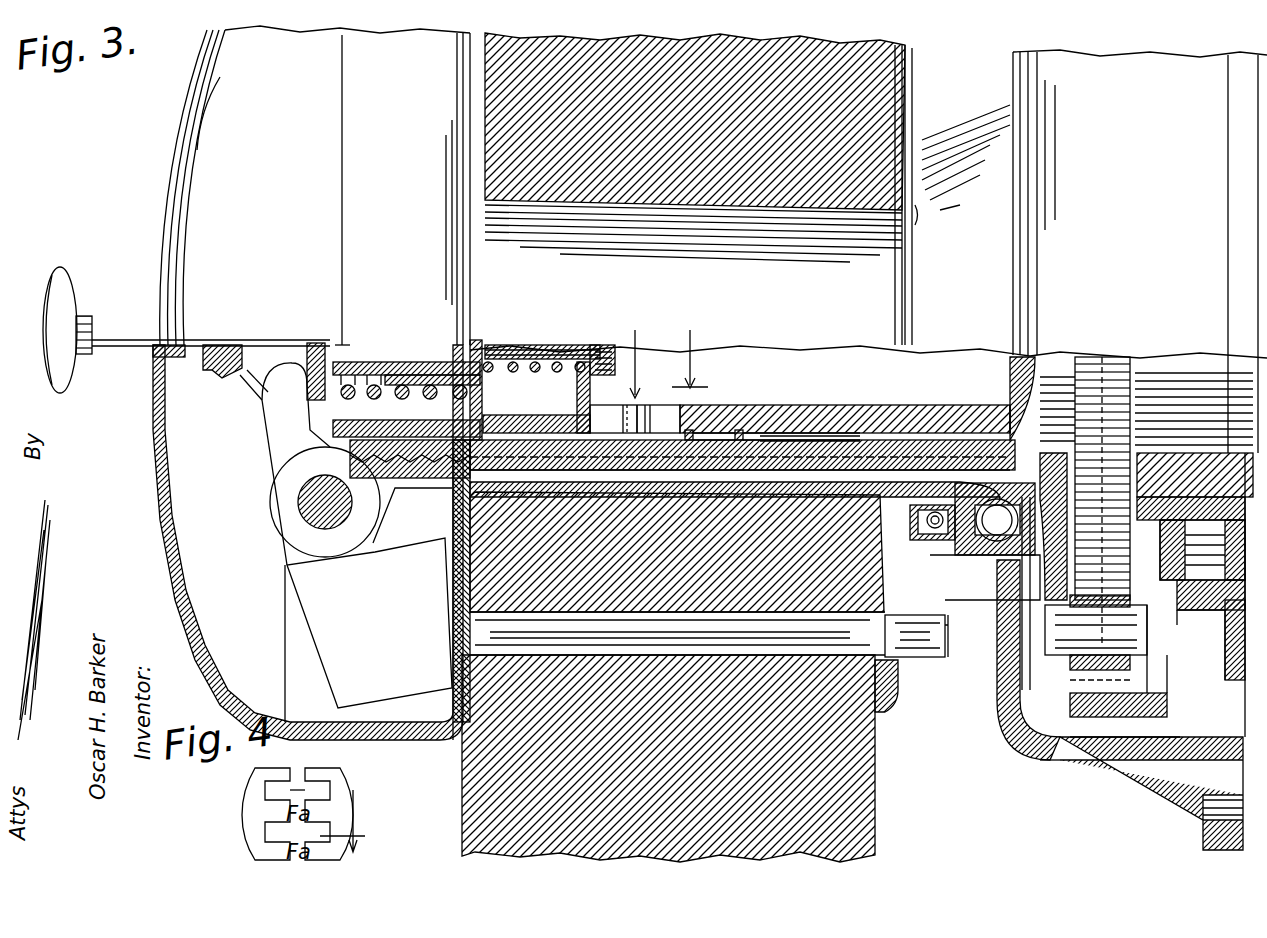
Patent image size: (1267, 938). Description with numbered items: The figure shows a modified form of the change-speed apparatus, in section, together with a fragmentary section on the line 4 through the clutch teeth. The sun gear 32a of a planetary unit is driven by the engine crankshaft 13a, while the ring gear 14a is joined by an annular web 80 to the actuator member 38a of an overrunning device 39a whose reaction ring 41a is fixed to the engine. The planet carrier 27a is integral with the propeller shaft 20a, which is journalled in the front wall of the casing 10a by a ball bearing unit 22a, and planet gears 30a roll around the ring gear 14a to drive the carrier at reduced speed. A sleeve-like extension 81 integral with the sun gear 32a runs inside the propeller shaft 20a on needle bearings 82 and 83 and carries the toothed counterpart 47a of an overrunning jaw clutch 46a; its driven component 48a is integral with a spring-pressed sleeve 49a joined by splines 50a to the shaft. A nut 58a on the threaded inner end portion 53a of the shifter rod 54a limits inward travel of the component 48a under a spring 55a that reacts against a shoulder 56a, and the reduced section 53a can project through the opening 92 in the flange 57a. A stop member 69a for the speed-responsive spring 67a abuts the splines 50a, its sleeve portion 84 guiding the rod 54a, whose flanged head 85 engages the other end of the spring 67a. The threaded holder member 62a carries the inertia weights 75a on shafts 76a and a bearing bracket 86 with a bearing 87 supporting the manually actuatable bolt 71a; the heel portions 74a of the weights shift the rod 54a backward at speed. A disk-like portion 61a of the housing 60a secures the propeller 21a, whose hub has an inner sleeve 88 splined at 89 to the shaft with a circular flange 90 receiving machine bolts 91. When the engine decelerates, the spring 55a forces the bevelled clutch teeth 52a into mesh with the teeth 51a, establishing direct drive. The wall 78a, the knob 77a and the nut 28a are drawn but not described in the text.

In FIG. 3, the housing 60a is at (172, 157).
In FIG. 3, the wall 78a is at (165, 200).
In FIG. 3, the flanged head 85 is at (335, 345).
In FIG. 3, the knob 77a is at (56, 278).
In FIG. 3, the manually actuatable bolt 71a is at (130, 335).
In FIG. 3, the inertia weights 75a is at (308, 542).
In FIG. 3, the shafts 76a is at (320, 505).
In FIG. 3, the bearing bracket 86 is at (247, 378).
In FIG. 3, the bearing 87 is at (215, 372).
In FIG. 3, the heel portions 74a is at (298, 365).
In FIG. 3, the sleeve portion 84 is at (412, 385).
In FIG. 3, the shifter rod 54a is at (406, 363).
In FIG. 3, the speed responsive device spring 67a is at (365, 399).
In FIG. 3, the stop member 69a is at (440, 388).
In FIG. 3, the splines 50a is at (457, 404).
In FIG. 3, the threaded holder member 62a is at (430, 488).
In FIG. 3, the spring 55a is at (540, 337).
In FIG. 3, the shoulder 56a is at (490, 345).
In FIG. 3, the threaded inner end portion 53a is at (522, 345).
In FIG. 3, the spring-pressed sleeve 49a is at (535, 412).
In FIG. 3, the flange 57a is at (580, 380).
In FIG. 3, the opening 92 is at (592, 350).
In FIG. 3, the nut 58a is at (604, 352).
In FIG. 3, the driven component 48a is at (632, 393).
In FIG. 4, the driven component 48a is at (250, 812).
In FIG. 3, the overrunning jaw clutch 46a is at (648, 403).
In FIG. 3, the section line 4 is at (669, 342).
In FIG. 3, the inner sleeve 88 is at (810, 485).
In FIG. 3, the splines 89 is at (764, 466).
In FIG. 3, the needle bearings 83 is at (790, 486).
In FIG. 3, the toothed counterpart 47a is at (690, 405).
In FIG. 4, the toothed counterpart 47a is at (345, 800).
In FIG. 3, the propeller shaft 20a is at (845, 440).
In FIG. 3, the sleeve-like extension 81 is at (922, 415).
In FIG. 3, the needle bearings 82 is at (982, 440).
In FIG. 3, the crankshaft 13a is at (868, 249).
In FIG. 3, the sun gear 32a is at (1135, 400).
In FIG. 3, the actuator member 38a is at (1195, 531).
In FIG. 3, the reaction ring 41a is at (1212, 595).
In FIG. 3, the overrunning device 39a is at (1215, 630).
In FIG. 3, the ball bearing unit 22a is at (990, 565).
In FIG. 3, the planet gears 30a is at (1040, 590).
In FIG. 3, the nut 28a is at (1096, 637).
In FIG. 3, the annular web 80 is at (1167, 700).
In FIG. 3, the casing 10a is at (1160, 766).
In FIG. 3, the ring gear 14a is at (1120, 737).
In FIG. 3, the planet carrier 27a is at (1040, 692).
In FIG. 3, the propeller 21a is at (880, 794).
In FIG. 3, the machine bolts 91 is at (709, 634).
In FIG. 3, the circular flange 90 is at (896, 708).
In FIG. 3, the disk-like portion 61a is at (458, 742).
In FIG. 4, the clutch teeth 52a is at (286, 778).
In FIG. 4, the clutch teeth 51a is at (360, 821).